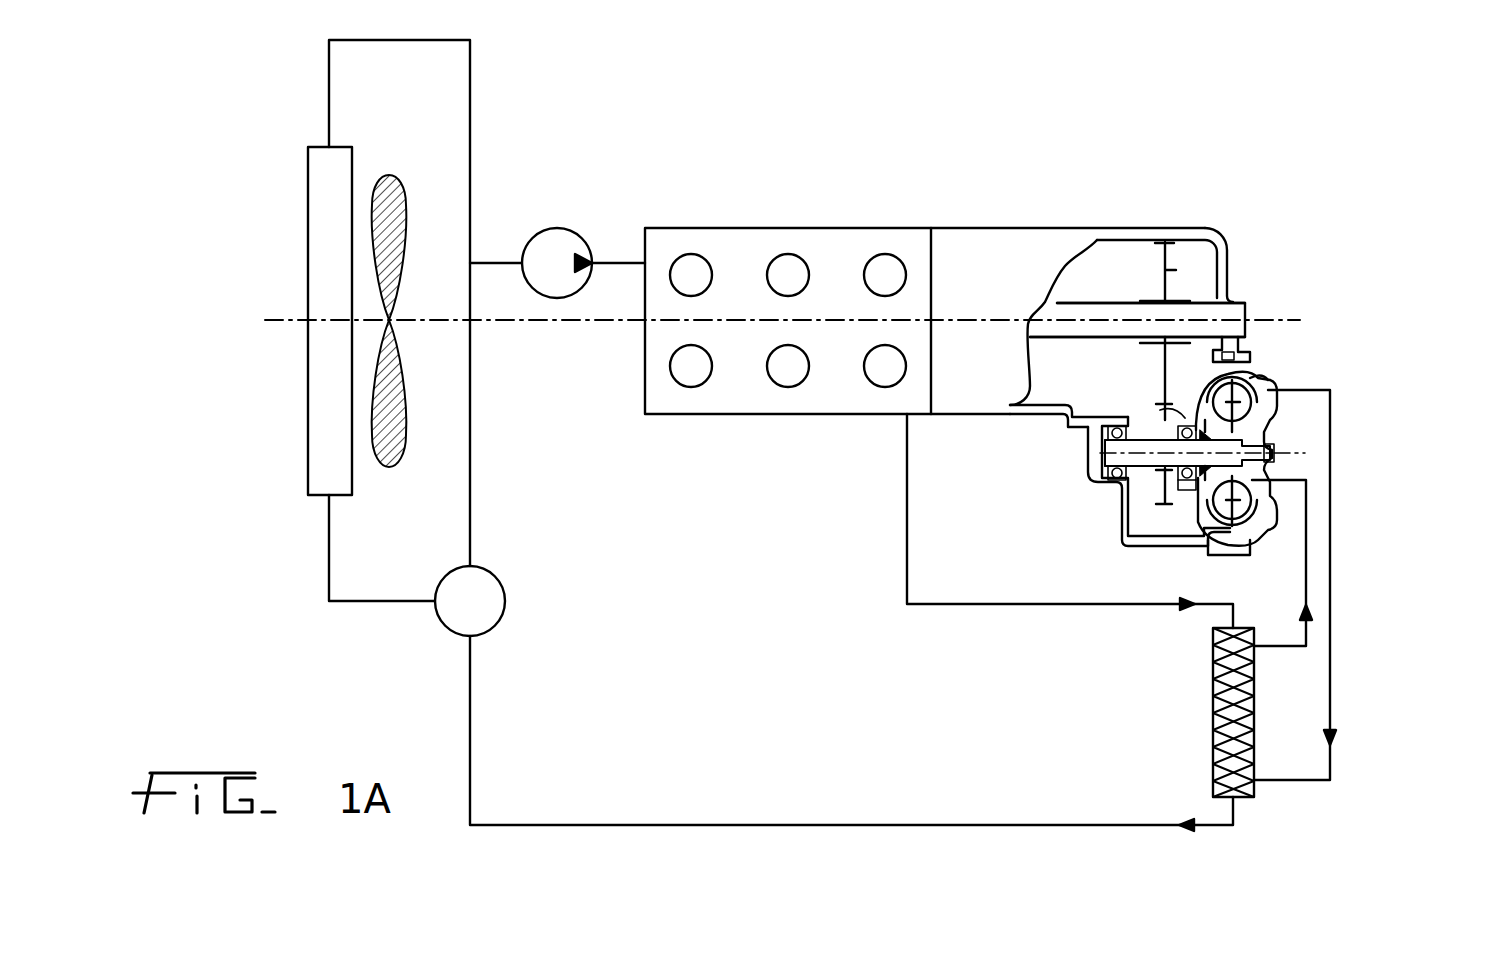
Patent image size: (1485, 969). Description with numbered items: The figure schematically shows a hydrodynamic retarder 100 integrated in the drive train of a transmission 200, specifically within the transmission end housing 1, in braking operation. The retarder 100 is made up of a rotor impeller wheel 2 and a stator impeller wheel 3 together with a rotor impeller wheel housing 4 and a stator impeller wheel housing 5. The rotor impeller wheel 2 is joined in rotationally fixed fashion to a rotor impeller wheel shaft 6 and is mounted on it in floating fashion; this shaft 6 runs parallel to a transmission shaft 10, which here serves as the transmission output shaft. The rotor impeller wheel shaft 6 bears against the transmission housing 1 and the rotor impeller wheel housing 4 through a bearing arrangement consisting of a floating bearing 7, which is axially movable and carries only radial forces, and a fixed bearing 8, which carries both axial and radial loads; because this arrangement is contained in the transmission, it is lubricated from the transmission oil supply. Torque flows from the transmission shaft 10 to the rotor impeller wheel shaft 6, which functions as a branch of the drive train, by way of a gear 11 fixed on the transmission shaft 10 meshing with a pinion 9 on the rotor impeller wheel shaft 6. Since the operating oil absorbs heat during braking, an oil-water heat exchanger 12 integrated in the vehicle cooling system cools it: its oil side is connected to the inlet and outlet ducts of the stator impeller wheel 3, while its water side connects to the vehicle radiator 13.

The transmission end housing 1 is at (1225, 268).
The rotor impeller wheel 2 is at (1225, 510).
The stator impeller wheel 3 is at (1243, 413).
The rotor impeller wheel housing 4 is at (1246, 352).
The stator impeller wheel housing 5 is at (1268, 390).
The rotor impeller wheel shaft 6 is at (1107, 448).
The floating bearing 7 is at (1186, 482).
The fixed bearing 8 is at (1115, 478).
The pinion 9 is at (1160, 410).
The transmission shaft 10 is at (1110, 300).
The gear 11 is at (1165, 270).
The heat exchanger 12 is at (1218, 698).
The vehicle radiator 13 is at (318, 203).
The hydrodynamic retarder 100 is at (1360, 452).
The transmission 200 is at (977, 250).